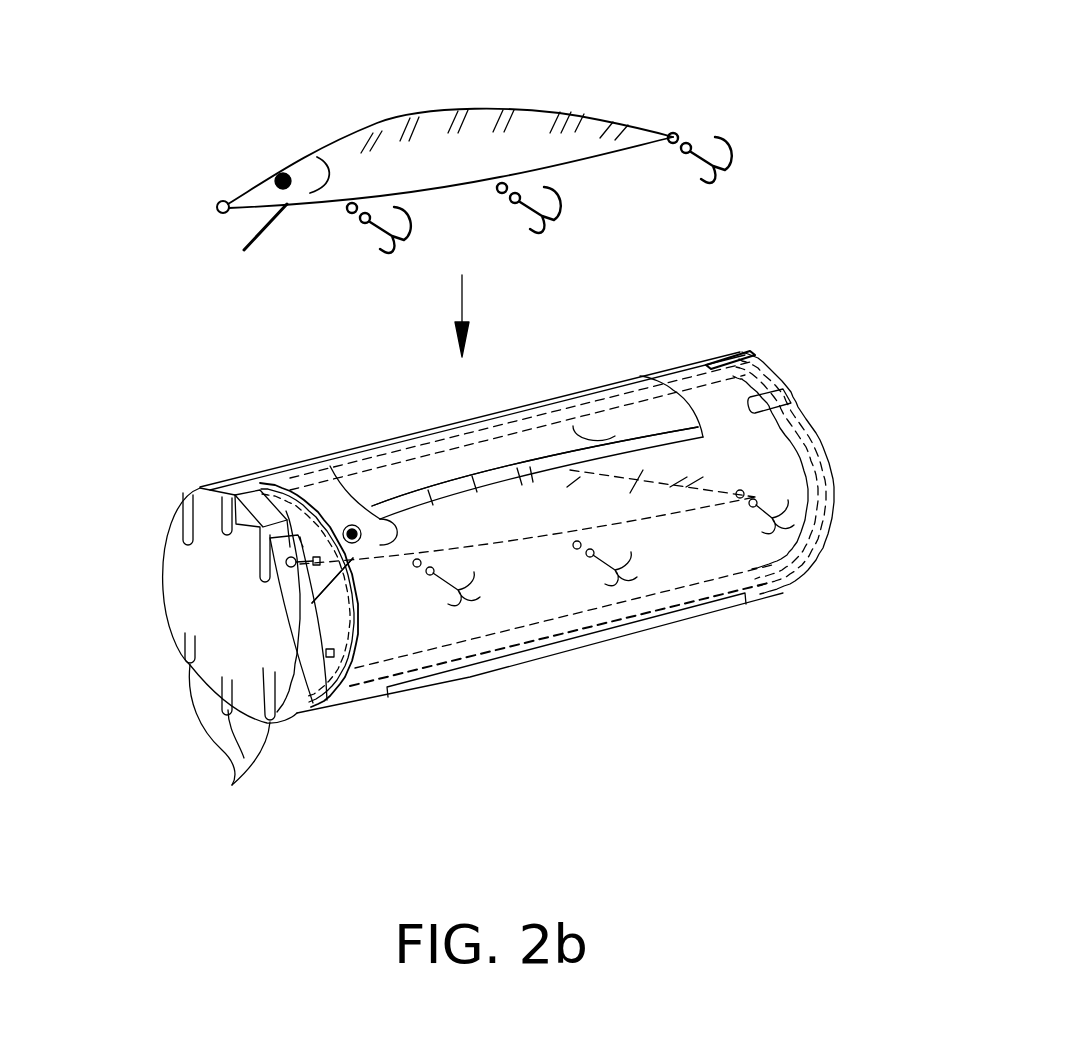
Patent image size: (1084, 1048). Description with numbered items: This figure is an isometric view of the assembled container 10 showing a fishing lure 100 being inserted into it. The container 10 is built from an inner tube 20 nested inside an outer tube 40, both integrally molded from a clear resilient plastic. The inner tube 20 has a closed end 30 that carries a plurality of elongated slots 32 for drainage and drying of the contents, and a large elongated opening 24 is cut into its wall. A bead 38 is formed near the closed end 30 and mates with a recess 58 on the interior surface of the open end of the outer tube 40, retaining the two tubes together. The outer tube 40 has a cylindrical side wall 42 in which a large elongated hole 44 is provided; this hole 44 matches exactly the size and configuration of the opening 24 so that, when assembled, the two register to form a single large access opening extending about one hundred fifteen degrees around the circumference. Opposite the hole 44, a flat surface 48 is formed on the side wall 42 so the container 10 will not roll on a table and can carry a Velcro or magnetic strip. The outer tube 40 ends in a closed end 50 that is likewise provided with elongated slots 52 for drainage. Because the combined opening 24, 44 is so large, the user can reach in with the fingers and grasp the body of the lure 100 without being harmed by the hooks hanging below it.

The container 10 is at (194, 478).
The inner tube 20 is at (303, 700).
The elongated opening 24 is at (598, 428).
The closed end 30 is at (190, 597).
The elongated slots 32 is at (230, 785).
The bead 38 is at (360, 643).
The outer tube 40 is at (783, 593).
The cylindrical side wall 42 is at (813, 580).
The elongated hole 44 is at (535, 466).
The flat surface 48 is at (557, 653).
The closed end 50 is at (830, 466).
The elongated slots 52 is at (763, 357).
The recess 58 is at (332, 580).
The fishing lure 100 is at (557, 110).